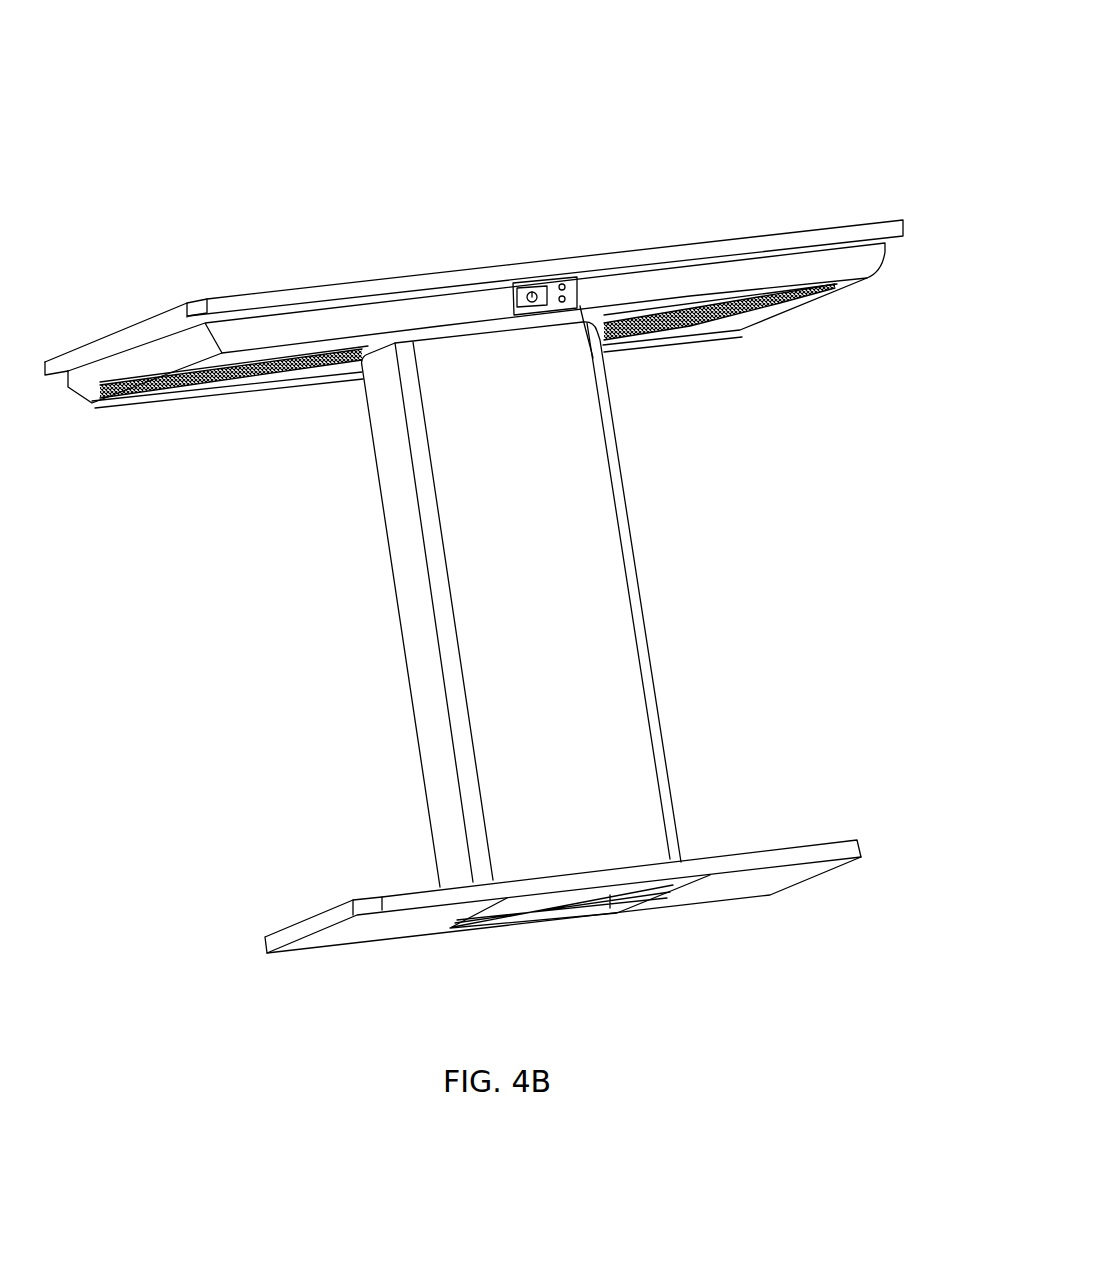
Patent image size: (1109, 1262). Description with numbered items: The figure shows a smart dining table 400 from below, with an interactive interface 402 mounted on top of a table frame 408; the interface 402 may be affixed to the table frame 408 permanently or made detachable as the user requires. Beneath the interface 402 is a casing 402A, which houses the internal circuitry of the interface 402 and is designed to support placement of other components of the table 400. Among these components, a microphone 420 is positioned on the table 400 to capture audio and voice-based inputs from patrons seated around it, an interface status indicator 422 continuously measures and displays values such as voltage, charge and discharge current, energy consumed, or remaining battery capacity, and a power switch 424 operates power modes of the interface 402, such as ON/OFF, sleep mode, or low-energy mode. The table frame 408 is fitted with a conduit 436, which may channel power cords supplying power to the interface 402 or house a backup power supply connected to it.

The smart dining table 400 is at (740, 57).
The interactive interface 402 is at (100, 338).
The casing 402A is at (92, 403).
The table frame 408 is at (615, 598).
The microphone 420 is at (577, 274).
The interface status indicator 422 is at (515, 283).
The power switch 424 is at (593, 358).
The conduit 436 is at (562, 905).